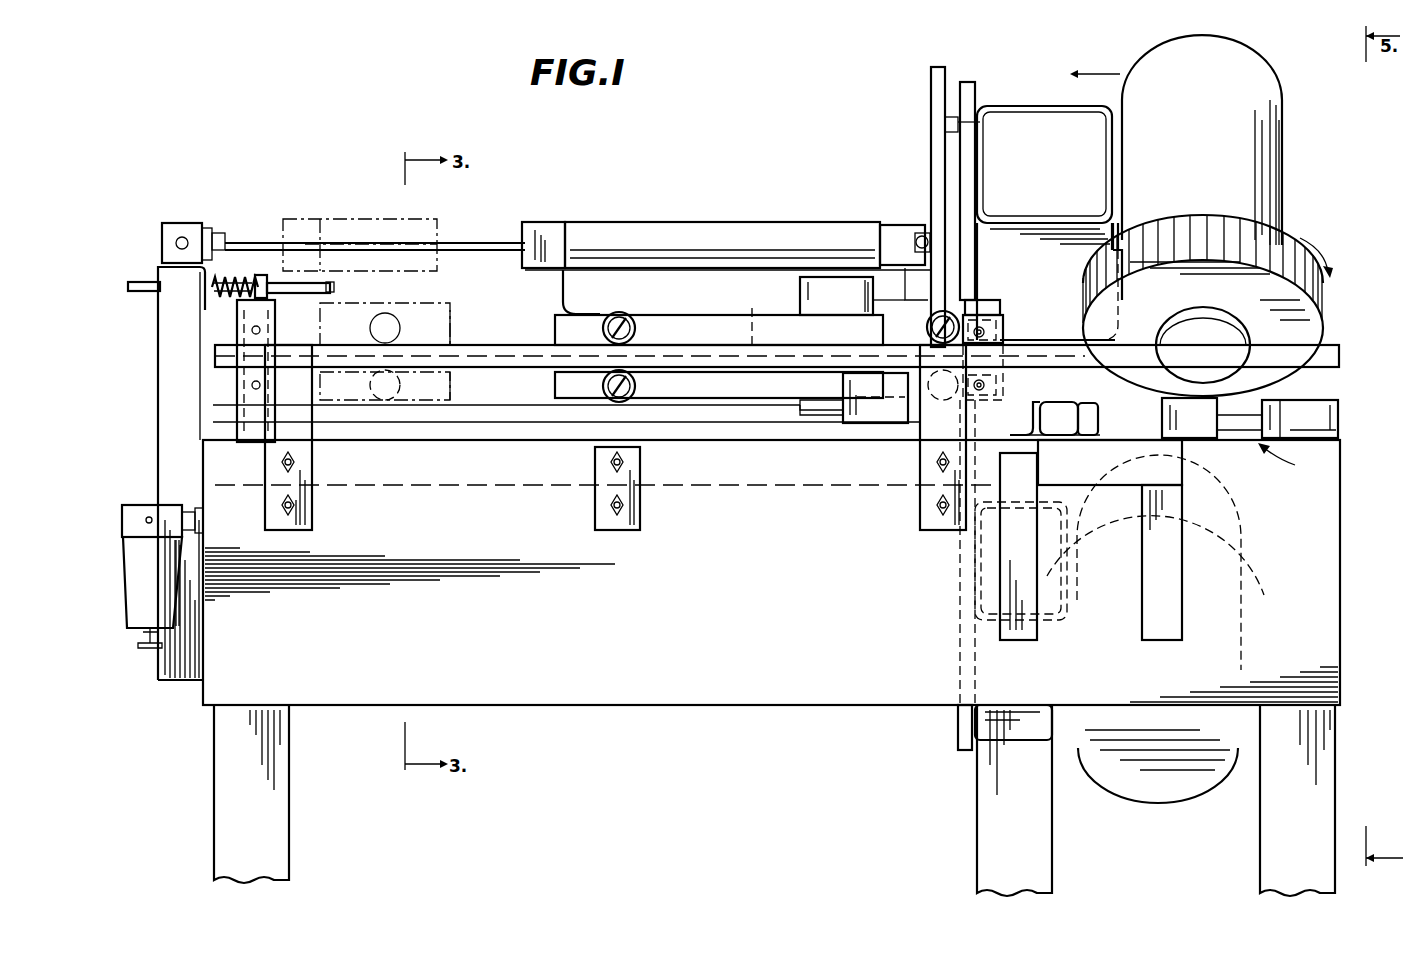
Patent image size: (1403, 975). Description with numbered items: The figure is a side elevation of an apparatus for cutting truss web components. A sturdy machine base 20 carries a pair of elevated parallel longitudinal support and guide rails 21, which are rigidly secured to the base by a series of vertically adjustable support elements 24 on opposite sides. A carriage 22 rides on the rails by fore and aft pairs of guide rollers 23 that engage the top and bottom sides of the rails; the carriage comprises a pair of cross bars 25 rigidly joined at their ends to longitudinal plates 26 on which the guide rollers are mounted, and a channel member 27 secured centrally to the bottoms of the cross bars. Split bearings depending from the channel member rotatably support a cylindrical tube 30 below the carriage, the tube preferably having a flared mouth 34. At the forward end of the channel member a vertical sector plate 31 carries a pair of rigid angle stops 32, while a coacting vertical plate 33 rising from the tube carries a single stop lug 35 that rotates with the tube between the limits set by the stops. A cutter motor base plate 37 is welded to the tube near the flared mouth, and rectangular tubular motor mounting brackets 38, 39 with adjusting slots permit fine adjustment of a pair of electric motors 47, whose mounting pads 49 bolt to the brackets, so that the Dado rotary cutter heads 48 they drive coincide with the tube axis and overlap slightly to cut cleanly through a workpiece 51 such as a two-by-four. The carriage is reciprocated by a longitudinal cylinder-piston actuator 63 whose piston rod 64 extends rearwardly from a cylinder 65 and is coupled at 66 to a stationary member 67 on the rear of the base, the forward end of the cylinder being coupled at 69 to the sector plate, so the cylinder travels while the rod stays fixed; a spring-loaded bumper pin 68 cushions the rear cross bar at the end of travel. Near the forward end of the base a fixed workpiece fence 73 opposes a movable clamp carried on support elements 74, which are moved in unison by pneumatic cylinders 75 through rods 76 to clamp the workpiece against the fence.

The machine base 20 is at (748, 690).
The longitudinal support and guide rails 21 is at (490, 345).
The carriage 22 is at (447, 306).
The guide rollers 23 is at (383, 318).
The vertically adjustable support elements 24 is at (313, 500).
The cross bars 25 is at (334, 300).
The longitudinal plates 26 is at (777, 388).
The channel member 27 is at (715, 320).
The cylindrical tube 30 is at (757, 325).
The sector plate 31 is at (932, 130).
The angle stops 32 is at (948, 117).
The vertical plate 33 is at (965, 165).
The flared mouth 34 is at (1003, 337).
The stop lug 35 is at (983, 131).
The cutter motor base plate 37 is at (958, 735).
The tubular motor mounting bracket 38 is at (1012, 106).
The tubular motor mounting bracket 39 is at (988, 632).
The electric motors 47 is at (1268, 160).
The Dado rotary cutter heads 48 is at (1297, 252).
The mounting pads 49 is at (1112, 240).
The workpiece 51 is at (1152, 362).
The cylinder-piston actuator 63 is at (682, 222).
The piston rod 64 is at (478, 246).
The cylinder 65 is at (375, 222).
The coupling 66 is at (184, 237).
The stationary member 67 is at (163, 284).
The spring-loaded bumper pin 68 is at (272, 282).
The coupling 69 is at (918, 236).
The workpiece fence 73 is at (1063, 410).
The support elements 74 is at (1240, 400).
The pneumatic cylinders 75 is at (1318, 408).
The rods 76 is at (1287, 462).